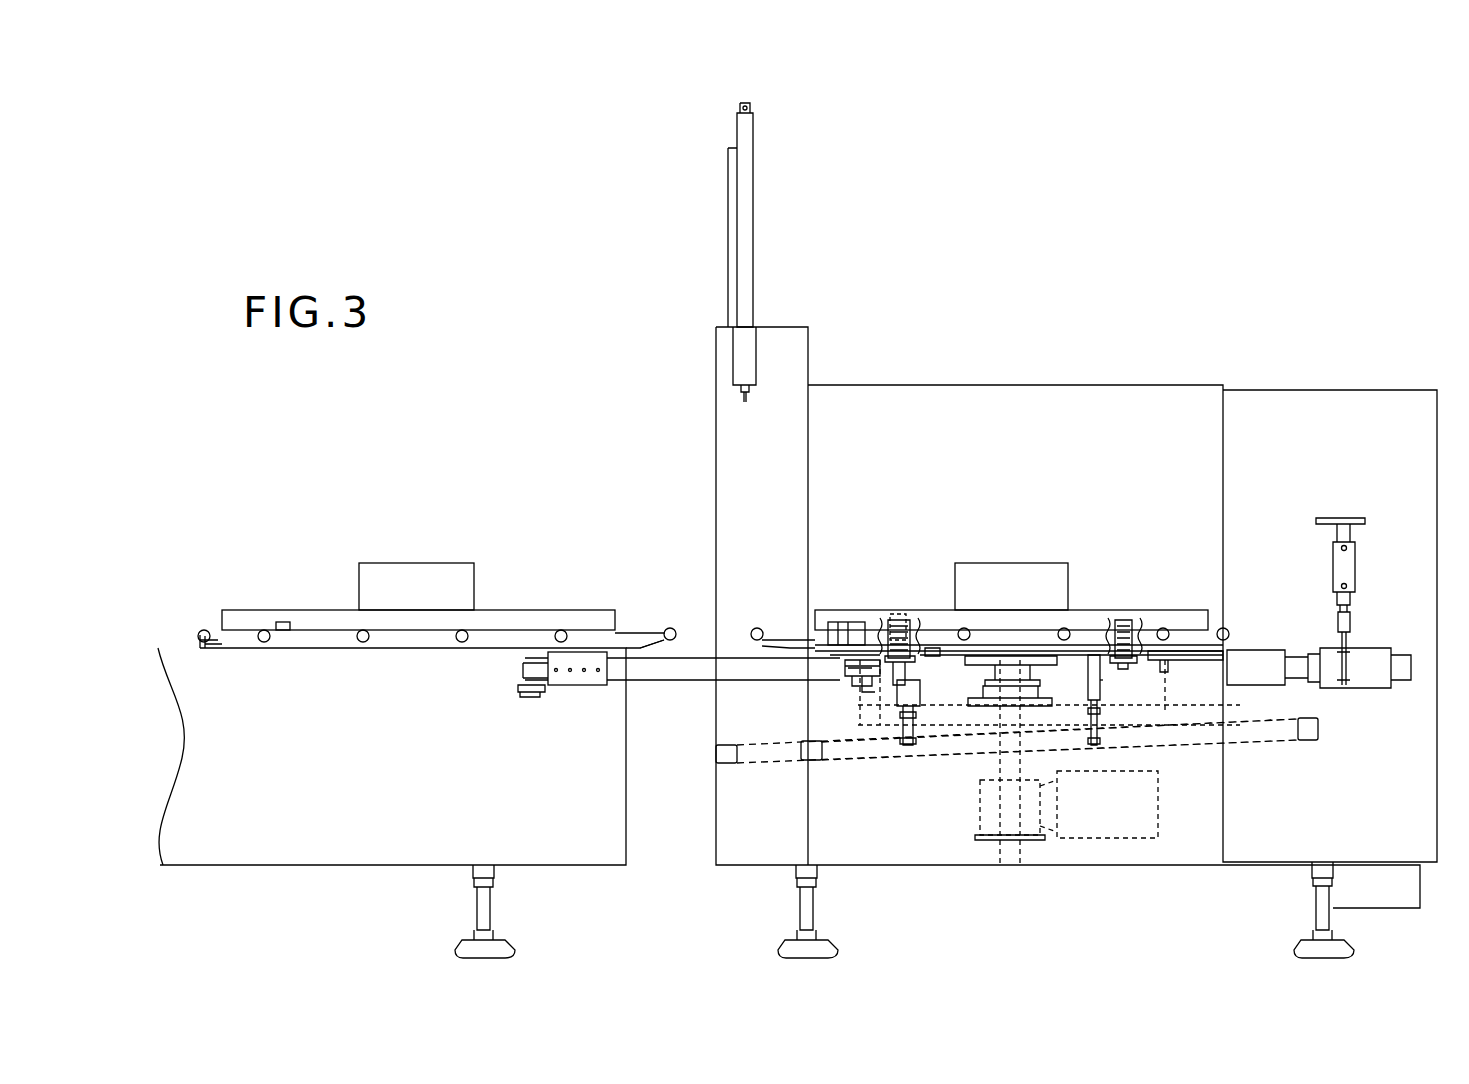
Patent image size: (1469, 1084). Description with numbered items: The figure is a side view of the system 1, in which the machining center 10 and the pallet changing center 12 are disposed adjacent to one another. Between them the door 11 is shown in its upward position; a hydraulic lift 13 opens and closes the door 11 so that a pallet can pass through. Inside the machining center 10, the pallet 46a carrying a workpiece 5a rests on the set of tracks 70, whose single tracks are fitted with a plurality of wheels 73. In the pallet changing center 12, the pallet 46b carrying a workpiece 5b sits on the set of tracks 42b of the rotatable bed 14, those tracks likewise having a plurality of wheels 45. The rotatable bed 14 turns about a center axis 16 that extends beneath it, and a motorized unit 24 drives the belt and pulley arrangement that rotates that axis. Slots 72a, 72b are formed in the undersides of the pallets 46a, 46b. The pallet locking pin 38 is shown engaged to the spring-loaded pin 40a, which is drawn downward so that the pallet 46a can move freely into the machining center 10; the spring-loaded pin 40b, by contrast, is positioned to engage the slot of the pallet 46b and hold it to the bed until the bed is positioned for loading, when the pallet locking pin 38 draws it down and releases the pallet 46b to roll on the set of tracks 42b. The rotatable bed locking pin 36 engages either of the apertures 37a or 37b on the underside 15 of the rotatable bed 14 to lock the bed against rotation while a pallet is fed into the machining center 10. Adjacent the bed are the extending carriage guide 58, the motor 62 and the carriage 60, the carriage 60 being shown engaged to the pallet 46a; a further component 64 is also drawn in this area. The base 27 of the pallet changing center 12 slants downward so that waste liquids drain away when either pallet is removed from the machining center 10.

The system 1 is at (1006, 258).
The machining center 10 is at (242, 546).
The door 11 is at (728, 240).
The pallet changing center 12 is at (1118, 408).
The hydraulic lift 13 is at (753, 197).
The rotatable bed 14 is at (838, 655).
The underside of the rotatable bed 15 is at (855, 670).
The center axis 16 is at (1000, 796).
The motorized unit 24 is at (1035, 818).
The base 27 is at (768, 765).
The rotatable bed locking pin 36 is at (1100, 682).
The aperture 37a is at (932, 657).
The aperture 37b is at (1093, 655).
The pallet locking pin 38 is at (906, 700).
The spring-loaded pin 40a is at (902, 628).
The spring-loaded pin 40b is at (1138, 650).
The set of tracks 42b is at (792, 632).
The wheels 45 is at (1229, 634).
The pallet 46a is at (540, 610).
The pallet 46b is at (855, 622).
The workpiece 5a is at (430, 562).
The workpiece 5b is at (1010, 562).
The extending carriage guide 58 is at (655, 680).
The carriage 60 is at (575, 688).
The motor 62 is at (1370, 690).
The cylinder 64 is at (1345, 570).
The set of tracks 70 is at (648, 630).
The slot 72a is at (282, 622).
The slot 72b is at (1125, 618).
The wheels 73 is at (200, 634).